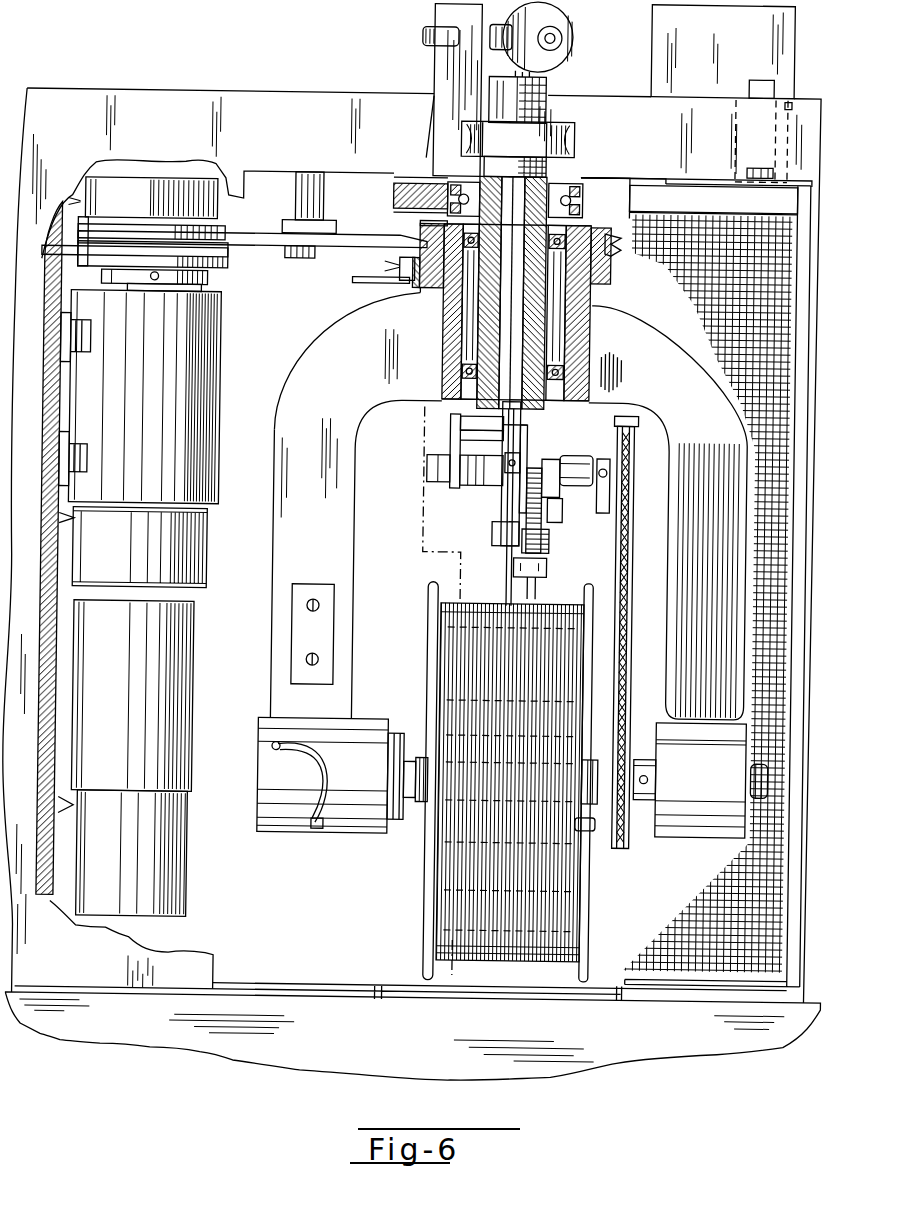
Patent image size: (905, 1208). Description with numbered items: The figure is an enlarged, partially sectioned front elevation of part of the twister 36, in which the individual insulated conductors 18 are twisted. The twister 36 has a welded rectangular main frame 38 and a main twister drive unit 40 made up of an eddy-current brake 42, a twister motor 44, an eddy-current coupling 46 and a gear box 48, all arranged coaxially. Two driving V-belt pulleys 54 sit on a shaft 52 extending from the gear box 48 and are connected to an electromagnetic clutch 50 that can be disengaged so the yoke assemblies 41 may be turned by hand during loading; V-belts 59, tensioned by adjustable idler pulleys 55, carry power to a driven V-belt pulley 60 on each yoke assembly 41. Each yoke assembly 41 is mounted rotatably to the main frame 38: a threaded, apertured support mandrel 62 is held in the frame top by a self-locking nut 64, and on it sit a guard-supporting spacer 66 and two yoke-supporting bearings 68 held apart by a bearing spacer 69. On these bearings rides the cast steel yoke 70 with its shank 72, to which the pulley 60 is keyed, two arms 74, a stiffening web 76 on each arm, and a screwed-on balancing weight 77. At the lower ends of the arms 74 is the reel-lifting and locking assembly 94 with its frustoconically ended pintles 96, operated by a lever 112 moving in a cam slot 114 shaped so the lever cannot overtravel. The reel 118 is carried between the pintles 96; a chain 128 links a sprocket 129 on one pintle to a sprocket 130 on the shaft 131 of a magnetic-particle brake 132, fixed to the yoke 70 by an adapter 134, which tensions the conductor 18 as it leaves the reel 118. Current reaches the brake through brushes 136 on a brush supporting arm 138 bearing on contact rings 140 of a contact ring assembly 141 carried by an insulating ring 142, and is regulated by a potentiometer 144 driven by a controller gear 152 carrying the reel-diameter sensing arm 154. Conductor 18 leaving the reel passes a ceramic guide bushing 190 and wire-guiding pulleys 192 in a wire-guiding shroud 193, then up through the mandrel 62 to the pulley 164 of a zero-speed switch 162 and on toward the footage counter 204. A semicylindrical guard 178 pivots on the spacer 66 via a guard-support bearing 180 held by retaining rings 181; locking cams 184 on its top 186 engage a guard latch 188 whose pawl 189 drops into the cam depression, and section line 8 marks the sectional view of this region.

The section line 8- 8 is at (420, 427).
The insulated conductor 18 is at (504, 567).
The twister 36 is at (120, 76).
The main frame 38 is at (272, 92).
The main twister drive unit 40 is at (220, 495).
The yoke assembly 41 is at (324, 874).
The eddy-current brake 42 is at (192, 900).
The twister motor 44 is at (198, 702).
The eddy-current coupling 46 is at (208, 571).
The gear box 48 is at (218, 396).
The electromagnetic clutch 50 is at (124, 182).
The shaft 52 is at (198, 288).
The driving V-belt pulley 54 is at (226, 234).
The adjustable idler pulley 55 is at (294, 261).
The V-belt 59 is at (312, 236).
The driven V-belt pulley 60 is at (414, 224).
The support mandrel 62 is at (478, 322).
The self-locking nut 64 is at (572, 135).
The guard-supporting spacer 66 is at (590, 176).
The yoke-supporting bearing 68 is at (580, 314).
The bearing spacer 69 is at (462, 356).
The yoke 70 is at (296, 362).
The shank 72 is at (588, 317).
The arm 74 is at (357, 586).
The stiffening web 76 is at (290, 400).
The balancing weight 77 is at (309, 586).
The reel-lifting and locking assembly 94 is at (258, 800).
The reel-lifting and support pintle 96 is at (412, 808).
The lever 112 is at (316, 826).
The cam slot 114 is at (272, 750).
The reel 118 is at (427, 907).
The chain 128 is at (556, 552).
The sprocket 129 is at (640, 702).
The sprocket 130 is at (639, 518).
The shaft 131 is at (579, 506).
The magnetic-particle brake 132 is at (485, 473).
The adapter 134 is at (470, 440).
The brush 136 is at (408, 290).
The brush supporting arm 138 is at (380, 292).
The contact ring 140 is at (606, 282).
The contact ring assembly 141 is at (448, 286).
The insulating ring 142 is at (609, 268).
The potentiometer 144 is at (552, 520).
The controller gear 152 is at (546, 478).
The reel-diameter sensing arm 154 is at (538, 588).
The zero-speed switch 162 is at (425, 19).
The pulley 164 is at (560, 40).
The guard 178 is at (585, 165).
The guard-support bearing 180 is at (440, 181).
The retaining ring 181 is at (428, 156).
The locking cam 184 is at (712, 178).
The top 186 is at (402, 190).
The guard latch 188 is at (790, 98).
The pawl 189 is at (742, 188).
The ceramic guide bushing 190 is at (540, 448).
The wire-guiding pulley 192 is at (496, 438).
The wire-guiding shroud 193 is at (500, 533).
The footage counter 204 is at (646, 70).